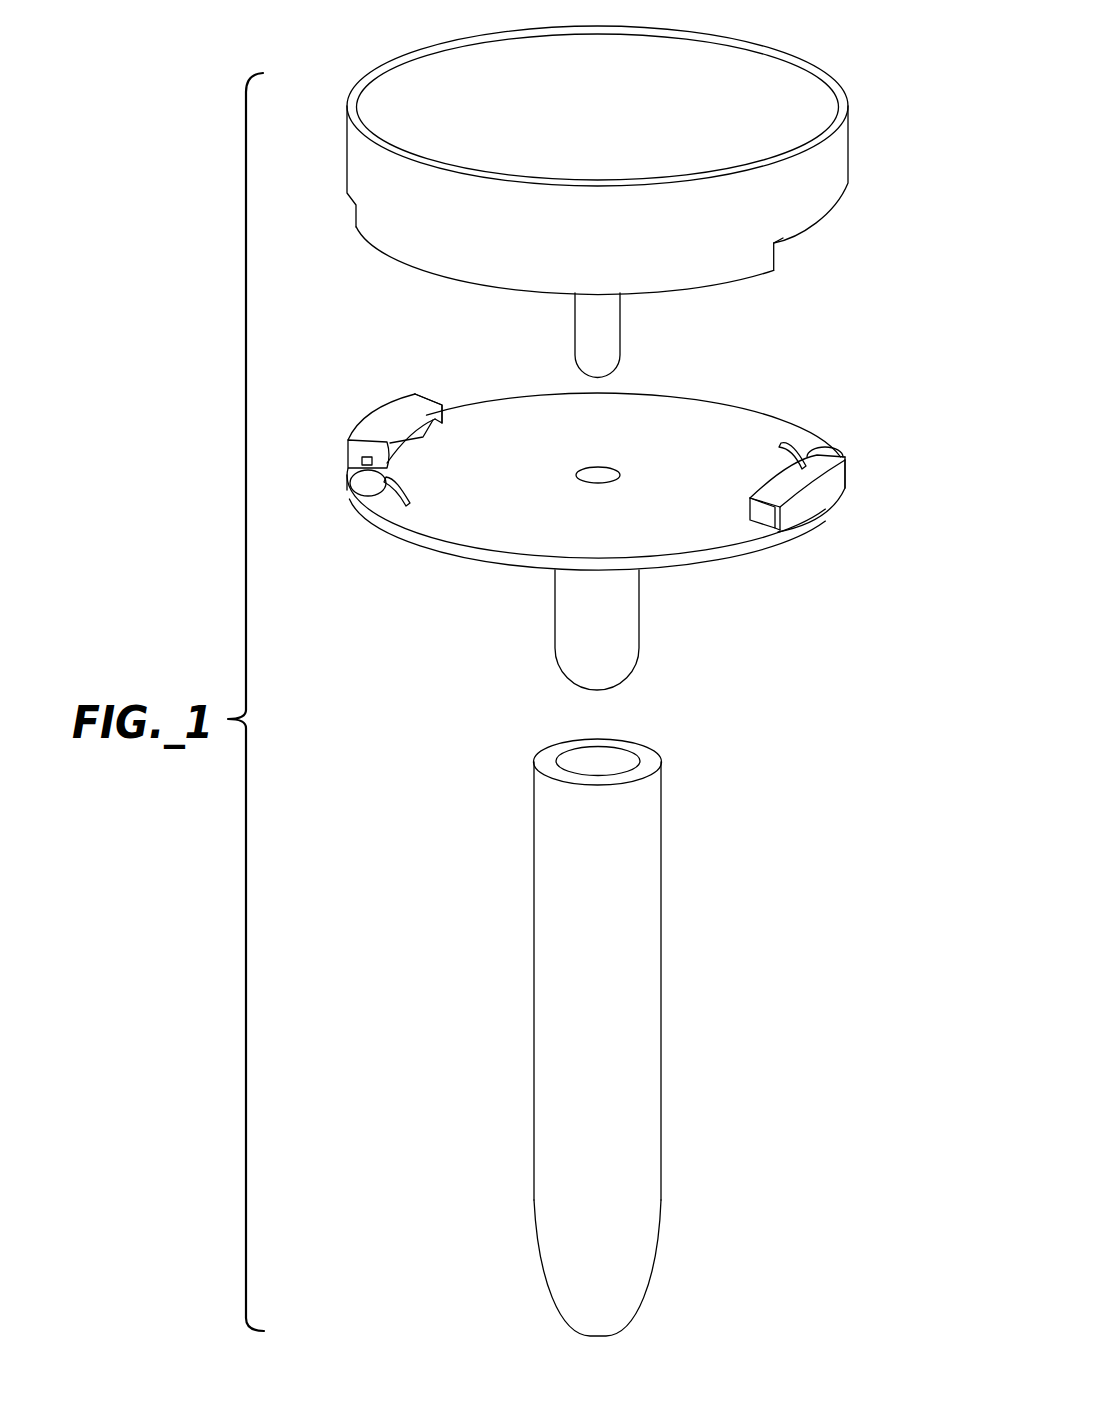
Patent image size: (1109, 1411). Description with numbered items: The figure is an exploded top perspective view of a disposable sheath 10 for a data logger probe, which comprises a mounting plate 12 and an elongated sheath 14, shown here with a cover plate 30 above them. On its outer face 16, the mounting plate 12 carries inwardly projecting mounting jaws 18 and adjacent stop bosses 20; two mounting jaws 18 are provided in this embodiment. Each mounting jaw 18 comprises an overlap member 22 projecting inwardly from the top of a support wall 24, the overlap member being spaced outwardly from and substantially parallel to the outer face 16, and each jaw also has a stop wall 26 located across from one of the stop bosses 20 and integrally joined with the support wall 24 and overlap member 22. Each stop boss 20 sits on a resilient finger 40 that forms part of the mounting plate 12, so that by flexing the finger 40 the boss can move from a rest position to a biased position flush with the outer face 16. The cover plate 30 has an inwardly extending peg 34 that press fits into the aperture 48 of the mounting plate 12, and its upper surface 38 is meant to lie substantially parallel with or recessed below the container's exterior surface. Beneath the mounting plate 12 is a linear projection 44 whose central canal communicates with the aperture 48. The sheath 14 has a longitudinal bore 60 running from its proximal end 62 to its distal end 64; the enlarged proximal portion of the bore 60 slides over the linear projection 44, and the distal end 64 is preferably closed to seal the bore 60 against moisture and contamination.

The disposable sheath 10 is at (844, 313).
The mounting plate 12 is at (601, 519).
The elongated sheath 14 is at (600, 1029).
The outer face 16 is at (609, 522).
The mounting jaw 18 is at (601, 473).
The stop boss 20 is at (352, 497).
The overlap member 22 is at (385, 437).
The support wall 24 is at (350, 457).
The stop wall 26 is at (446, 408).
The cover plate 30 is at (597, 191).
The peg 34 is at (588, 313).
The upper surface 38 is at (605, 116).
The resilient finger 40 is at (386, 506).
The linear projection 44 is at (610, 622).
The aperture 48 is at (605, 470).
The longitudinal bore 60 is at (608, 753).
The proximal end 62 is at (543, 860).
The distal end 64 is at (600, 1337).